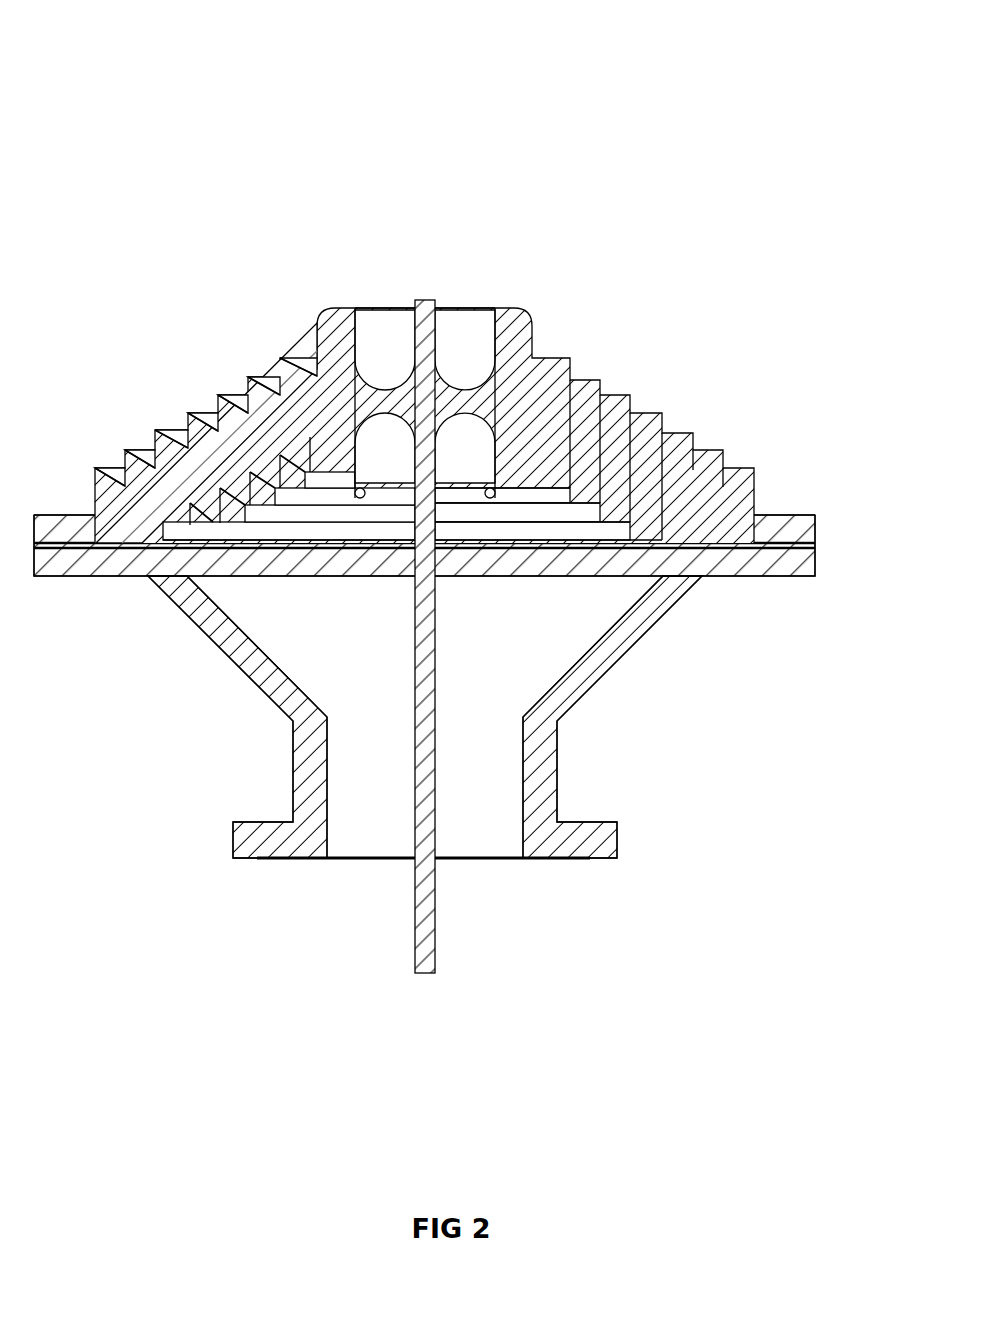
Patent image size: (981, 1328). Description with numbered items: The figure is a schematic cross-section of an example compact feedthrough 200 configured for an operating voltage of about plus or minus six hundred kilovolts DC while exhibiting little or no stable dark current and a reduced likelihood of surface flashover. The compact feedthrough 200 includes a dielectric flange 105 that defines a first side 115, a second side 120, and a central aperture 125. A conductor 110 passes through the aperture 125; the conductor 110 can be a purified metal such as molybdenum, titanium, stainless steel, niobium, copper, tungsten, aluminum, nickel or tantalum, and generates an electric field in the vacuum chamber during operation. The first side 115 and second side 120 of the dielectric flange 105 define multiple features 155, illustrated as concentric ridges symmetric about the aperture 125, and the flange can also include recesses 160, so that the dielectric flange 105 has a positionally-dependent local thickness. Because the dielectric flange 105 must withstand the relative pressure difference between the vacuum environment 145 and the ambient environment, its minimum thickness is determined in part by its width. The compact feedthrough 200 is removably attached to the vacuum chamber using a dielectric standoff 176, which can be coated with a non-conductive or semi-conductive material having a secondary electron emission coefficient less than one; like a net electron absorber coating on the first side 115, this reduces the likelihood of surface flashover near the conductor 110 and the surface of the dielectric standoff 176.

The compact feedthrough 200 is at (812, 31).
The dielectric flange 105 is at (798, 520).
The conductor 110 is at (428, 868).
The first side 115 is at (159, 519).
The second side 120 is at (150, 426).
The aperture 125 is at (355, 290).
The vacuum environment 145 is at (246, 602).
The features 155 is at (680, 433).
The recesses 160 is at (465, 310).
The dielectric standoff 176 is at (540, 765).